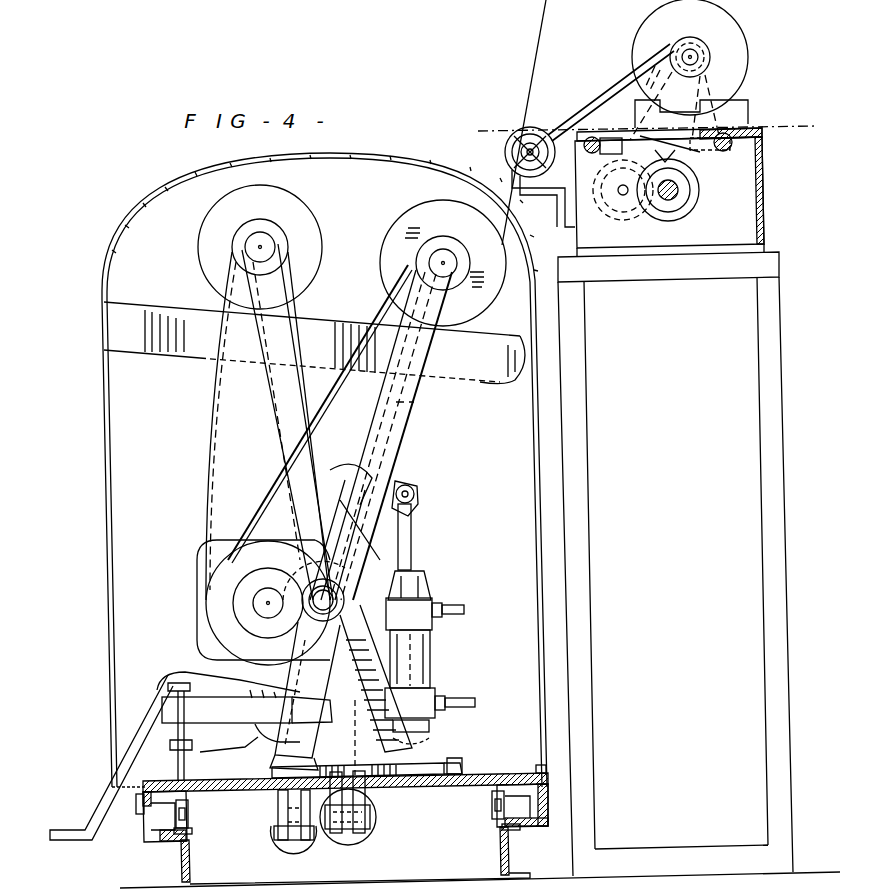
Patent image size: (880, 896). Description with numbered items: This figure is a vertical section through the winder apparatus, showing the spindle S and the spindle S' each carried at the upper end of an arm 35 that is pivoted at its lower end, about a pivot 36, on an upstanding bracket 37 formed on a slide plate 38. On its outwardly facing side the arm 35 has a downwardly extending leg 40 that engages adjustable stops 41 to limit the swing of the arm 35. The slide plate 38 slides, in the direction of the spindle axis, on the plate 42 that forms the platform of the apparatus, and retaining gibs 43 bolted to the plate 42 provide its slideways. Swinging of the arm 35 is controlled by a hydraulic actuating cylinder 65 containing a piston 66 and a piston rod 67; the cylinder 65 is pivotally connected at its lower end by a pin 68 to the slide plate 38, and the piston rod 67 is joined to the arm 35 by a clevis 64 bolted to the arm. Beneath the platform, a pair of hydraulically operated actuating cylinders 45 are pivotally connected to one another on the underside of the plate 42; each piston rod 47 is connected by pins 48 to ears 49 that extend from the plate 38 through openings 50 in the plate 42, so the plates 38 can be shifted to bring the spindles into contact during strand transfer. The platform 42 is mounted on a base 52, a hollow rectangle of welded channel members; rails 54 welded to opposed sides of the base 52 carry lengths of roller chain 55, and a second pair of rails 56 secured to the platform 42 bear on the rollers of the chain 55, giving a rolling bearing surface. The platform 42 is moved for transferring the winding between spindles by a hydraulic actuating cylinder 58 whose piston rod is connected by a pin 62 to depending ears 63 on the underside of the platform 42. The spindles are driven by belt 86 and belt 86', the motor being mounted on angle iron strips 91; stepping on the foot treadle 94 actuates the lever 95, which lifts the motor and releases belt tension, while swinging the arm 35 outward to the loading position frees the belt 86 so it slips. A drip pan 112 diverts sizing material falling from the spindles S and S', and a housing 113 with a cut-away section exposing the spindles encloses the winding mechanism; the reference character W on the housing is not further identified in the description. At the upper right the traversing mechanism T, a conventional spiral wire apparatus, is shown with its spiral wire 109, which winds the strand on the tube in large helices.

The housing W is at (163, 186).
The housing 113 is at (106, 543).
The drip pan 112 is at (187, 318).
The driving belt 86 is at (367, 381).
The belt 86' is at (241, 392).
The spiral wire 109 is at (506, 157).
The traversing mechanism T is at (618, 45).
The spindle S is at (646, 114).
The spindle S' is at (437, 405).
The arm 35 is at (403, 412).
The clevis 64 is at (414, 488).
The piston rod 67 is at (413, 520).
The pivot 36 is at (365, 582).
The leg 40 is at (245, 650).
The upstanding bracket 37 is at (341, 690).
The hydraulic actuating cylinder 65 is at (434, 640).
The piston 66 is at (430, 666).
The adjustable stops 41 is at (448, 718).
The pin 68 is at (430, 742).
The lever 95 is at (178, 672).
The angle iron strips 91 is at (168, 710).
The foot treadle 94 is at (75, 832).
The openings 50 is at (352, 780).
The slide plate 38 is at (436, 786).
The retaining gibs 43 is at (455, 774).
The plate 42 is at (165, 780).
The second pair of rails 56 is at (150, 820).
The roller chain 55 is at (188, 810).
The rails 54 is at (190, 830).
The base 52 is at (180, 862).
The depending ears 63 is at (278, 805).
The pin 62 is at (274, 834).
The hydraulic actuating cylinder 58 is at (282, 858).
The piston rod 47 is at (343, 832).
The pins 48 is at (357, 822).
The hydraulically operated actuating cylinders 45 is at (360, 840).
The ears 49 is at (368, 788).